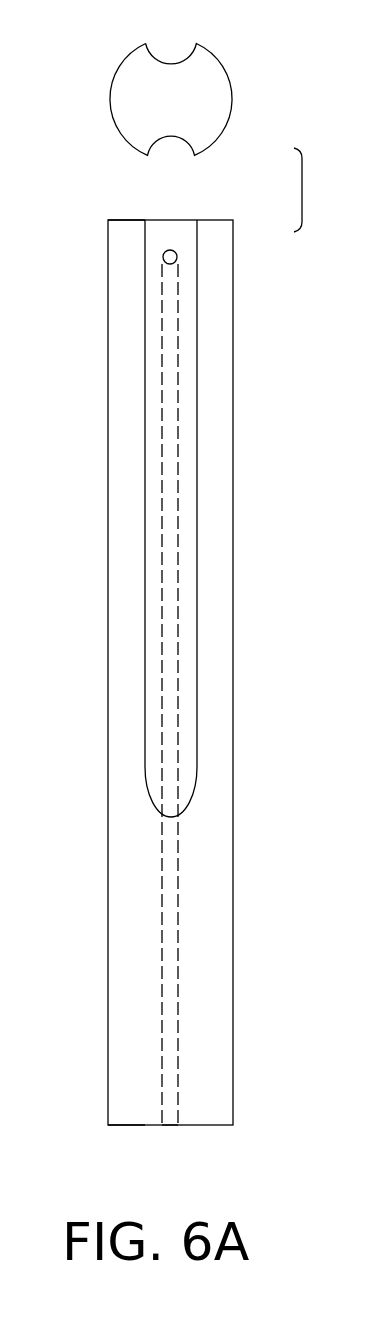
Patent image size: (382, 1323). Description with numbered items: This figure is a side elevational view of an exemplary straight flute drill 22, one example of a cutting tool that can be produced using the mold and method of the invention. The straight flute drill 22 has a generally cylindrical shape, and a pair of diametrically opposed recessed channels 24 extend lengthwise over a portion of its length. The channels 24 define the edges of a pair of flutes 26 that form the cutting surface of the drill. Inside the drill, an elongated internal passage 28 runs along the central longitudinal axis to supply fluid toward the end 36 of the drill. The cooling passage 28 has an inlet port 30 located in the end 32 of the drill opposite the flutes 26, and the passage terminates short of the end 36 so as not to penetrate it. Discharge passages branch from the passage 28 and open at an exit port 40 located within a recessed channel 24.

The straight flute drill 22 is at (88, 641).
The recessed channel 24 is at (166, 61).
The flute 26 is at (108, 98).
The internal passage 28 is at (172, 933).
The inlet port 30 is at (162, 1117).
The end 32 is at (127, 1125).
The end 36 is at (127, 220).
The exit port 40 is at (177, 255).